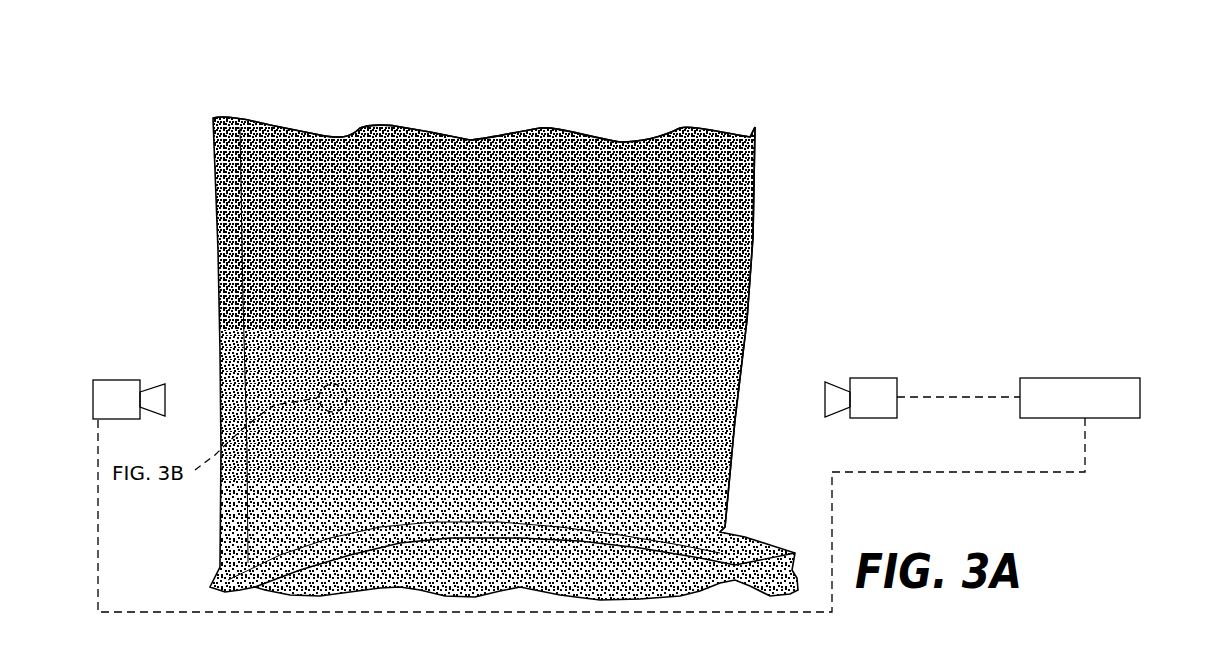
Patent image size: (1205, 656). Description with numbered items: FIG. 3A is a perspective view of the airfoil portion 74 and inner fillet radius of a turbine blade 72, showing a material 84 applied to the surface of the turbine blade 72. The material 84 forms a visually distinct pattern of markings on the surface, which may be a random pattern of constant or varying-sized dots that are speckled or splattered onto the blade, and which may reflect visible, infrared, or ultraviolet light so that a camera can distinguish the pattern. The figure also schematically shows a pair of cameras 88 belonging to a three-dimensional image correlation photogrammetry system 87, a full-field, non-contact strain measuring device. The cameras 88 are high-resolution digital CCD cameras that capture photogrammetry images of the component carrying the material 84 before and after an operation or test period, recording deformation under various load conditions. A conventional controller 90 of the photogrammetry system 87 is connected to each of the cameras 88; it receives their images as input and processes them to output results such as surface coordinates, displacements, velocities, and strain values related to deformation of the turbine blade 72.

The turbine blade 72 is at (172, 126).
The airfoil portion 74 is at (381, 168).
The material 84 is at (661, 262).
The cameras 88 is at (103, 379).
The 3D image correlation photogrammetry system 87 is at (970, 346).
The controller 90 is at (1115, 376).